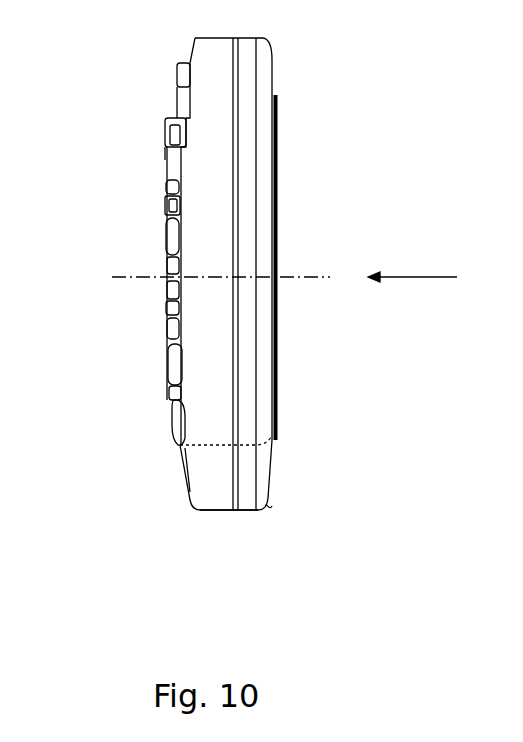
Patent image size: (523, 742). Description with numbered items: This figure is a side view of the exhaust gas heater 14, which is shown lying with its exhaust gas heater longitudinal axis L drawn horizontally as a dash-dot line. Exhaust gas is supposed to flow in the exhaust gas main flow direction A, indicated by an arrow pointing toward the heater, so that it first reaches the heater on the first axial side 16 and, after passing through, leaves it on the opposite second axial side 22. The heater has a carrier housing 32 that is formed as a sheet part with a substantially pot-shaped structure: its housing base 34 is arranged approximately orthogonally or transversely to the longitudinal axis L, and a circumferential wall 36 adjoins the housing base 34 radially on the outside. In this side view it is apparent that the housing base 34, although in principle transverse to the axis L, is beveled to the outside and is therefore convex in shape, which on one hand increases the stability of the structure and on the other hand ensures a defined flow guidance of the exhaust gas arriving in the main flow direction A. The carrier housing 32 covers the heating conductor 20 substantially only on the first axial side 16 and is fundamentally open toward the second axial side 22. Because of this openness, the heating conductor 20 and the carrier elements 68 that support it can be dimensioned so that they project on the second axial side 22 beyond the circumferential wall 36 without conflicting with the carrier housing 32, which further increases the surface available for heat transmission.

The exhaust gas heater 14 is at (252, 300).
The first axial side 16 is at (300, 311).
The heating conductor 20 is at (165, 358).
The second axial side 22 is at (98, 493).
The carrier housing 32 is at (268, 503).
The housing base 34 is at (277, 157).
The circumferential wall 36 is at (213, 512).
The carrier element 68 is at (165, 204).
The exhaust gas heater longitudinal axis L is at (123, 277).
The exhaust gas main flow direction A is at (442, 277).